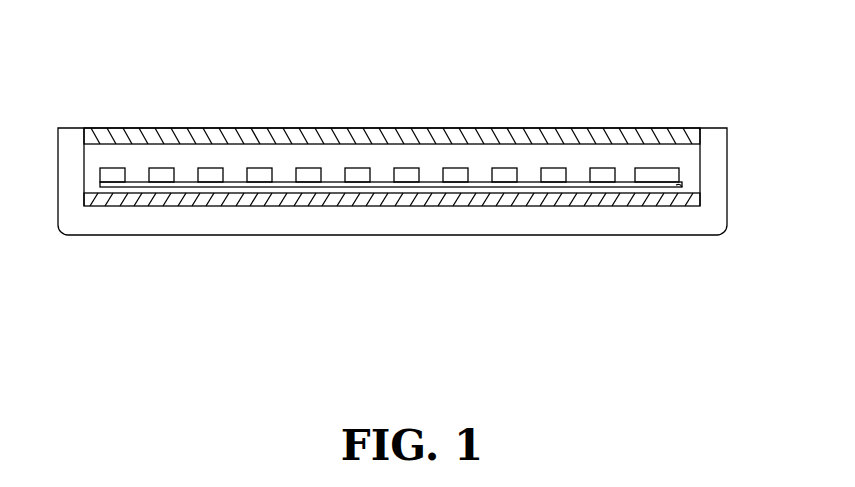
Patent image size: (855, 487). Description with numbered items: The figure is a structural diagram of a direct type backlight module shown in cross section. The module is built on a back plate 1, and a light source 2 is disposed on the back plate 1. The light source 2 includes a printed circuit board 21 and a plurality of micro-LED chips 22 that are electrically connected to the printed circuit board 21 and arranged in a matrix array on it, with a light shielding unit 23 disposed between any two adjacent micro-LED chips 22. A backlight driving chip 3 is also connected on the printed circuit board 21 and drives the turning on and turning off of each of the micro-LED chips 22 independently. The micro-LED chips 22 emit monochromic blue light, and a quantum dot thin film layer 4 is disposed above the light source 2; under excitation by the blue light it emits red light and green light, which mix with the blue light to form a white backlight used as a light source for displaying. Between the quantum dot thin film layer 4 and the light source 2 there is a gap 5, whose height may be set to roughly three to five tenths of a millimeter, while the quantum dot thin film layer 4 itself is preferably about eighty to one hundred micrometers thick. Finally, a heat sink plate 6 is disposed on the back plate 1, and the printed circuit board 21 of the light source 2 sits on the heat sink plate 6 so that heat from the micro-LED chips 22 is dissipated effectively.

The back plate 1 is at (395, 220).
The light source 2 is at (410, 125).
The backlight driving chip 3 is at (656, 178).
The quantum dot thin film layer 4 is at (502, 136).
The gap 5 is at (108, 157).
The heat sink plate 6 is at (571, 199).
The printed circuit board 21 is at (682, 186).
The micro-LED chips 22 is at (284, 181).
The light shielding unit 23 is at (212, 178).